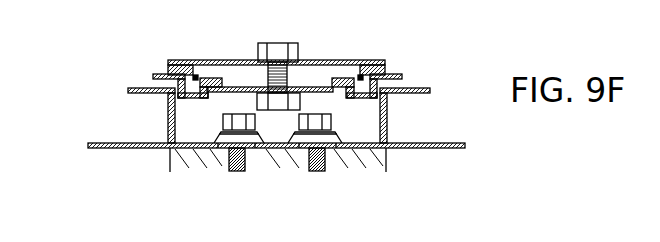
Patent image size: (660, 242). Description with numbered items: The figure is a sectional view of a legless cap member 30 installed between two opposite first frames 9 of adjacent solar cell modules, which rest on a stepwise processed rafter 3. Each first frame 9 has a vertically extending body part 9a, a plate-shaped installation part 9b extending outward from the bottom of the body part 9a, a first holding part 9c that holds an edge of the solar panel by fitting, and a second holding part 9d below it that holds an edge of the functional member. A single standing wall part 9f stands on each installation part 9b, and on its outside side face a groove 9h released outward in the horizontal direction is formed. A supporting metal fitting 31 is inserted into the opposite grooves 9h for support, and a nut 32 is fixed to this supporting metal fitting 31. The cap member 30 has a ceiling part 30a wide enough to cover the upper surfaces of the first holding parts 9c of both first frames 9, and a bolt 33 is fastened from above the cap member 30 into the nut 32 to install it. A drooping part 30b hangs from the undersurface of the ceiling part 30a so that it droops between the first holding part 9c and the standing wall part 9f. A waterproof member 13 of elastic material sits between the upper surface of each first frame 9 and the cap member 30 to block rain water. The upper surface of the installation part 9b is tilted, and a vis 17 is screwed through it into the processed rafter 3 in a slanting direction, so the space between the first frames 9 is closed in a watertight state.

The processed rafter 3 is at (396, 164).
The first frame 9 is at (266, 125).
The body part 9a is at (170, 147).
The installation part 9b is at (217, 150).
The first holding part 9c is at (156, 76).
The second holding part 9d is at (162, 94).
The standing wall part 9f is at (277, 128).
The groove 9h is at (229, 138).
The waterproof member 13 is at (170, 64).
The vis 17 is at (278, 170).
The cap member 30 is at (274, 40).
The ceiling part 30a is at (308, 60).
The drooping part 30b is at (210, 64).
The supporting metal fitting 31 is at (323, 87).
The nut 32 is at (276, 111).
The bolt 33 is at (274, 44).